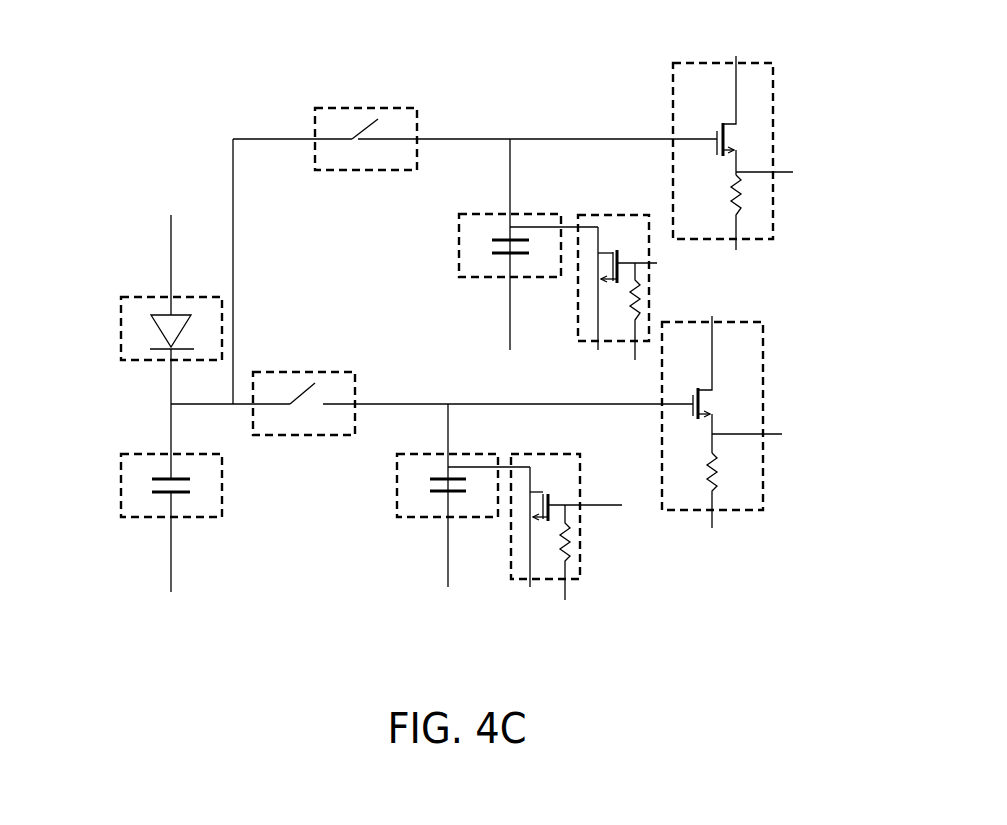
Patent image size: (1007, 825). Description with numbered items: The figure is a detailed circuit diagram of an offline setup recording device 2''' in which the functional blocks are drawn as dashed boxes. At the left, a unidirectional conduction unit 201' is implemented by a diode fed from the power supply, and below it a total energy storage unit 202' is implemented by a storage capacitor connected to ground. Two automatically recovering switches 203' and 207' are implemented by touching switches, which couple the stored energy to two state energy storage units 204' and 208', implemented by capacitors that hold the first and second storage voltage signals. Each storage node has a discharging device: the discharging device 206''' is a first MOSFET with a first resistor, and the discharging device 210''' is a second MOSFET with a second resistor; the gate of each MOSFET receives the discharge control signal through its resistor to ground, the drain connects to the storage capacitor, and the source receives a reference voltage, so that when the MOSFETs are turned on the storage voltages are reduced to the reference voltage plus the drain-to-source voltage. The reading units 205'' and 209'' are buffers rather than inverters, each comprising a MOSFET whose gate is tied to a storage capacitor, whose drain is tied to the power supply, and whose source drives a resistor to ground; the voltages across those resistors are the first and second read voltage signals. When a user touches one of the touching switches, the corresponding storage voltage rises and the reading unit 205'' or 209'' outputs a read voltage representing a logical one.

The offline setup recording device 2''' is at (434, 330).
The unidirectional conduction unit 201' is at (131, 328).
The total energy storage unit 202' is at (131, 480).
The automatically recovering switch 203' is at (366, 171).
The state energy storage unit 204' is at (488, 277).
The reading unit 205'' is at (701, 158).
The discharging device 206''' is at (629, 273).
The automatically recovering switch 207' is at (304, 436).
The state energy storage unit 208' is at (427, 518).
The reading unit 209'' is at (728, 430).
The discharging device 210''' is at (577, 524).